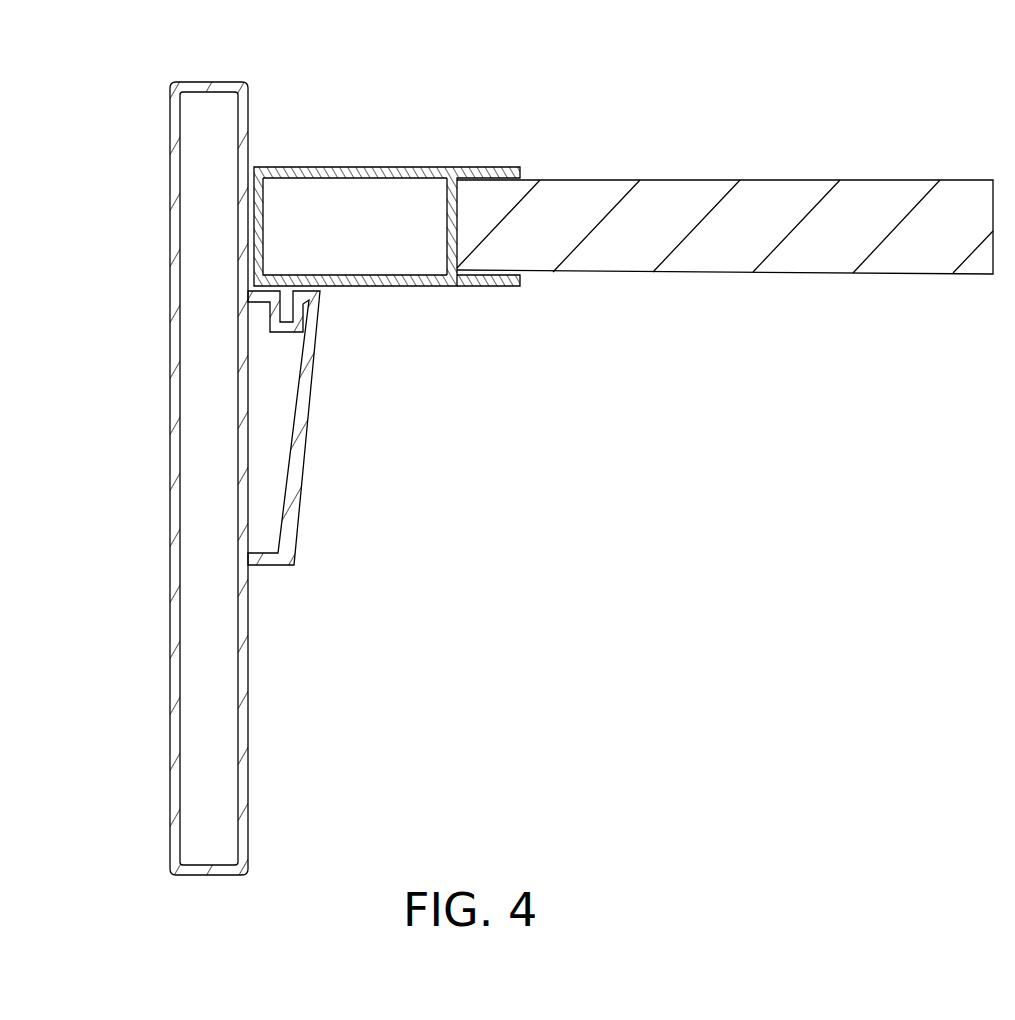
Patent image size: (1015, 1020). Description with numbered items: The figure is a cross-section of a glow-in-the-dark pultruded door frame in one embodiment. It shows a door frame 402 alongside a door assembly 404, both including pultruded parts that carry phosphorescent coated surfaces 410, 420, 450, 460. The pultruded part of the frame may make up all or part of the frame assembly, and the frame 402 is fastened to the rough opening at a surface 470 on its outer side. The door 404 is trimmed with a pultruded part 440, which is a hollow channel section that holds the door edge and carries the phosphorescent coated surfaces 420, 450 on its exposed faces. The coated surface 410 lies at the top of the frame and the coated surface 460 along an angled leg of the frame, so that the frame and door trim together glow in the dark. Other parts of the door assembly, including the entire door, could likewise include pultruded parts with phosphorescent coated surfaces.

The door frame 402 is at (170, 528).
The door assembly 404 is at (675, 187).
The phosphorescent coated surface 410 is at (247, 82).
The phosphorescent coated surface 420 is at (437, 168).
The pultruded part 440 is at (457, 222).
The phosphorescent coated surface 450 is at (463, 286).
The phosphorescent coated surface 460 is at (305, 471).
The surface 470 is at (170, 412).